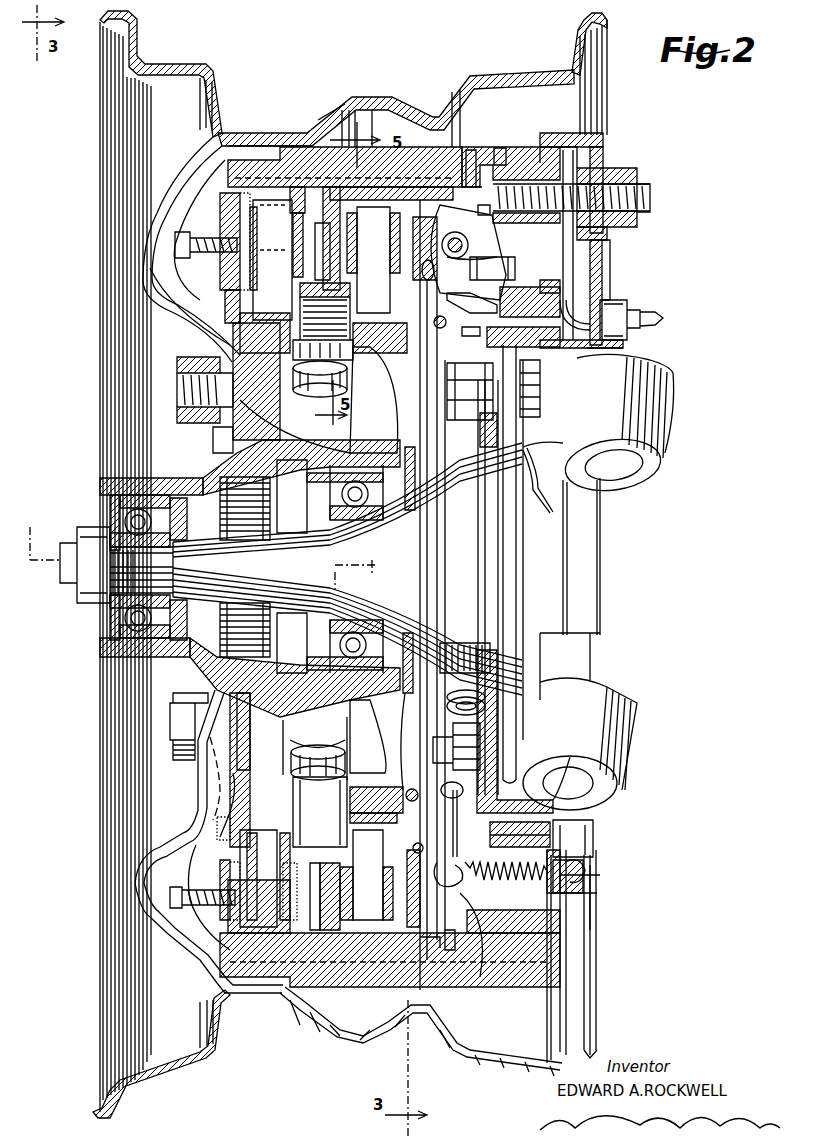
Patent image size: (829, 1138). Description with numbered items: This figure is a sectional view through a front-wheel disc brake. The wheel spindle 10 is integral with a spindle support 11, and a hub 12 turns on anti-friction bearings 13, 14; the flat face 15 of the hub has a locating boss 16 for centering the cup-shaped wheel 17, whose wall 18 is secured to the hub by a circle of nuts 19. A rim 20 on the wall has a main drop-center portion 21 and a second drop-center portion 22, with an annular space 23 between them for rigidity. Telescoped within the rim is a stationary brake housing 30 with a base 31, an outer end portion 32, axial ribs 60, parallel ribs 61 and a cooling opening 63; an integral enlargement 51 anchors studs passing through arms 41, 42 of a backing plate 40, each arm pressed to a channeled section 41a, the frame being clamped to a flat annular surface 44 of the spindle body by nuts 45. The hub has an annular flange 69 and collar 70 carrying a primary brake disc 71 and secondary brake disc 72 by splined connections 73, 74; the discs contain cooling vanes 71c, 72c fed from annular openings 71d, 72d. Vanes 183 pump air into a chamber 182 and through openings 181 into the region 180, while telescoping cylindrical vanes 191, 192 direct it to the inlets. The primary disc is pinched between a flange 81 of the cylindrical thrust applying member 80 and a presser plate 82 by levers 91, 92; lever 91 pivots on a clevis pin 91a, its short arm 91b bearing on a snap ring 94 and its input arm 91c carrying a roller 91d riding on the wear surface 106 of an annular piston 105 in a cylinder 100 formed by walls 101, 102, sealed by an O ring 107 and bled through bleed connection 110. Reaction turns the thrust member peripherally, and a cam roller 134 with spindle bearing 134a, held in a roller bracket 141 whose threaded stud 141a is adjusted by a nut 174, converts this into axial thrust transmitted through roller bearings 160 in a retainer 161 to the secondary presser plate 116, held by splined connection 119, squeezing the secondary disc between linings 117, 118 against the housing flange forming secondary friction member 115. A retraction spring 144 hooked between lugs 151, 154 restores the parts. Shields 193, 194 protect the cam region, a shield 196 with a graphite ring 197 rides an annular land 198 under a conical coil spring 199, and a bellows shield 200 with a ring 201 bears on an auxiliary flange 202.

The front wheel spindle 10 is at (66, 606).
The spindle support 11 is at (611, 497).
The hub 12 is at (90, 495).
The anti-friction bearing 13 is at (168, 522).
The anti-friction bearing 14 is at (330, 508).
The face 15 is at (218, 438).
The locating boss 16 is at (205, 465).
The wheel 17 is at (91, 177).
The wall 18 is at (242, 133).
The nuts 19 is at (178, 358).
The rim 20 is at (325, 108).
The main drop-center portion 21 is at (262, 137).
The second drop-center portion 22 is at (393, 103).
The annular space 23 is at (350, 108).
The stationary brake housing 30 is at (414, 134).
The base 31 is at (520, 128).
The outer end portion 32 is at (188, 208).
The frame 40 is at (488, 450).
The arm 41 is at (604, 268).
The channeled cross section 41a is at (605, 247).
The arm 42 is at (570, 812).
The flat annular surface 44 is at (500, 436).
The nuts 45 is at (455, 378).
The integral enlargement 51 is at (535, 135).
The axially arranged ribs 60 is at (505, 1012).
The parallel ribs 61 is at (254, 160).
The opening 63 is at (205, 200).
The annular flange 69 is at (262, 422).
The collar 70 is at (342, 338).
The primary brake disc 71 is at (378, 285).
The vanes 71c is at (380, 912).
The annular opening 71d is at (352, 840).
The secondary brake disc 72 is at (265, 287).
The internal cooling vanes 72c is at (280, 912).
The annular opening 72d is at (272, 843).
The splined connection 73 is at (355, 338).
The splined connection 74 is at (322, 320).
The thrust applying member 80 is at (395, 200).
The flange 81 is at (362, 262).
The presser plate 82 is at (430, 280).
The lever 91 is at (470, 250).
The clevis pin 91a is at (470, 245).
The short force applying arm 91b is at (450, 212).
The input arm 91c is at (455, 310).
The anti-friction roller 91d is at (472, 335).
The lever 92 is at (465, 695).
The snap ring 94 is at (470, 1005).
The annular cylinder 100 is at (545, 292).
The wall 101 is at (550, 300).
The wall 102 is at (583, 357).
The annular piston 105 is at (534, 223).
The wear surface 106 is at (487, 290).
The O ring 107 is at (600, 312).
The bleed connection 110 is at (646, 310).
The secondary friction member 115 is at (208, 316).
The annular presser plate 116 is at (280, 277).
The brake lining 117 is at (250, 222).
The brake lining 118 is at (250, 242).
The splined connection 119 is at (290, 200).
The roller 134 is at (462, 150).
The anti-friction spindle bearing 134a is at (494, 148).
The roller bracket 141 is at (590, 140).
The threaded stud 141a is at (652, 196).
The retraction spring 144 is at (580, 895).
The lug 151 is at (425, 842).
The lug 154 is at (598, 877).
The roller bearings 160 is at (302, 296).
The annular retainer 161 is at (340, 290).
The nut 174 is at (625, 180).
The region 180 is at (335, 825).
The spaced openings 181 is at (318, 733).
The annular recess 182 is at (333, 390).
The vane 183 is at (390, 397).
The cylindrical vane 191 is at (310, 848).
The cylindrical vane 192 is at (252, 870).
The shield 193 is at (467, 975).
The shield 194 is at (560, 912).
The shield 196 is at (420, 800).
The ring 197 is at (417, 772).
The annular land 198 is at (410, 790).
The coil spring 199 is at (422, 822).
The shield 200 is at (185, 855).
The ring 201 is at (236, 840).
The auxiliary flange 202 is at (232, 800).